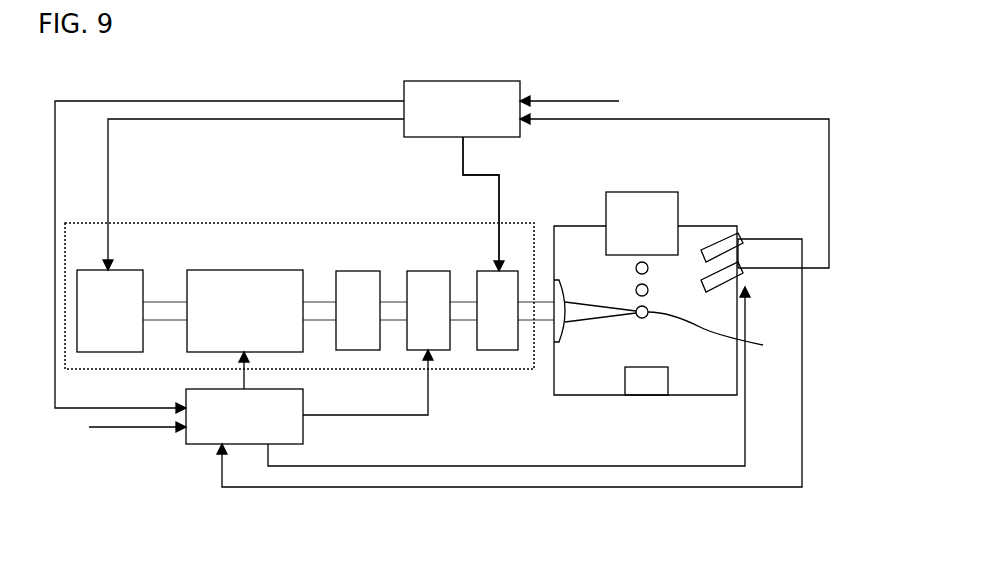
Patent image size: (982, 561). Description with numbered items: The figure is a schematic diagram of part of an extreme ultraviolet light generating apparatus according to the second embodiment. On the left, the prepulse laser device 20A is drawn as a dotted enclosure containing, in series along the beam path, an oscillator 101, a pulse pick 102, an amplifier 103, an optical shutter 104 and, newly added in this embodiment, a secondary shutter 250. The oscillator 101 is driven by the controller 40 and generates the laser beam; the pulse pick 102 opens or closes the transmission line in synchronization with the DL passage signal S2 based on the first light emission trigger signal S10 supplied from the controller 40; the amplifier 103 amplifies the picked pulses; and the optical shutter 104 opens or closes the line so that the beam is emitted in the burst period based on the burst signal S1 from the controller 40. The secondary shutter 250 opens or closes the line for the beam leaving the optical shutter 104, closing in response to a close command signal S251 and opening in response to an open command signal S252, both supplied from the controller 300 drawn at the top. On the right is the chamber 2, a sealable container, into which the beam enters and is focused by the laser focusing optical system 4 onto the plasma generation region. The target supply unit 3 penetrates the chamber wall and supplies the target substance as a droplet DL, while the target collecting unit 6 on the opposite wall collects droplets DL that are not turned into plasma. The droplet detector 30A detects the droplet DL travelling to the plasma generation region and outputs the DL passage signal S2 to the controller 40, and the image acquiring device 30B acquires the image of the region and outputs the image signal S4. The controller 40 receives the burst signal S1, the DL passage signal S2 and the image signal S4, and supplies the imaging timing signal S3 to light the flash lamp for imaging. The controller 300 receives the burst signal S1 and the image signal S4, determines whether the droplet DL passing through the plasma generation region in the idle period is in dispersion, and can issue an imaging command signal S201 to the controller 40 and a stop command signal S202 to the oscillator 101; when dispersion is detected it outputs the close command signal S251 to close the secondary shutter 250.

The controller 300 is at (461, 80).
The imaging command signal S201 is at (214, 100).
The stop command signal S202 is at (286, 118).
The burst signal S1 is at (571, 100).
The image signal S4 is at (686, 118).
The close command signal S251 is at (460, 152).
The open command signal S252 is at (481, 199).
The prepulse laser device 20A is at (289, 222).
The oscillator 101 is at (133, 268).
The pulse pick 102 is at (240, 268).
The amplifier 103 is at (358, 268).
The optical shutter 104 is at (430, 268).
The secondary shutter 250 is at (498, 352).
The first light emission trigger signal S10 is at (246, 378).
The controller 40 is at (199, 447).
The DL passage signal S2 is at (519, 488).
The imaging timing signal S3 is at (632, 467).
The chamber 2 is at (720, 397).
The target supply unit 3 is at (642, 191).
The laser focusing optical system 4 is at (558, 278).
The target collecting unit 6 is at (647, 394).
The droplet DL is at (720, 335).
The droplet detector 30A is at (728, 246).
The image acquiring device 30B is at (703, 285).